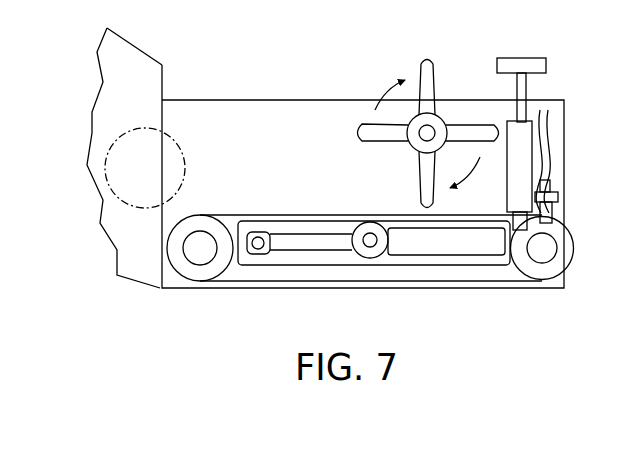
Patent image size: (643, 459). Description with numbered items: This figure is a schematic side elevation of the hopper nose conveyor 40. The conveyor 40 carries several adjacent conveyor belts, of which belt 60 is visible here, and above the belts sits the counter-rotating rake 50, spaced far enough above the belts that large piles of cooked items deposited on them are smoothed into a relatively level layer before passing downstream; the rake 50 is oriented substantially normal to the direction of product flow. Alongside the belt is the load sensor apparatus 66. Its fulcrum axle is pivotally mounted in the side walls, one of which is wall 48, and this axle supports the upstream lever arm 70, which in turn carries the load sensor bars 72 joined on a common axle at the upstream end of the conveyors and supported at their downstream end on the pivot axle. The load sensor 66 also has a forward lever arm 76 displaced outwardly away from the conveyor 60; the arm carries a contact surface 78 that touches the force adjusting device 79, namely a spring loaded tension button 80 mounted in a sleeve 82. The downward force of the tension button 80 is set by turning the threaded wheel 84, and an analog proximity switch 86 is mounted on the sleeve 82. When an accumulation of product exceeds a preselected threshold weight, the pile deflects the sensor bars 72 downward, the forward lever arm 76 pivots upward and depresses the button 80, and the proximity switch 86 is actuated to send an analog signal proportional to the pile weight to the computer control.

The hopper nose conveyor 40 is at (258, 98).
The wall 48 is at (222, 115).
The counter-rotating rake 50 is at (428, 62).
The conveyor belt 60 is at (227, 212).
The load sensor apparatus 66 is at (440, 250).
The upstream lever arm 70 is at (288, 245).
The load sensor bars 72 is at (287, 222).
The forward lever arm 76 is at (477, 248).
The contact surface 78 is at (553, 235).
The force adjusting device 79 is at (531, 120).
The spring loaded tension button 80 is at (515, 213).
The sleeve 82 is at (525, 157).
The threaded wheel 84 is at (515, 58).
The analog proximity switch 86 is at (553, 185).